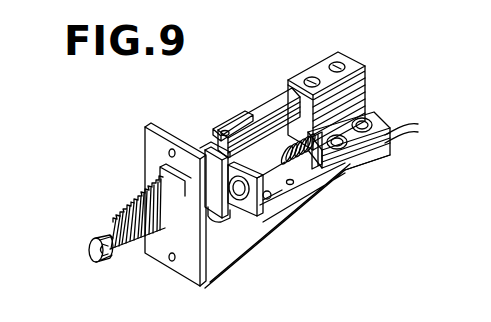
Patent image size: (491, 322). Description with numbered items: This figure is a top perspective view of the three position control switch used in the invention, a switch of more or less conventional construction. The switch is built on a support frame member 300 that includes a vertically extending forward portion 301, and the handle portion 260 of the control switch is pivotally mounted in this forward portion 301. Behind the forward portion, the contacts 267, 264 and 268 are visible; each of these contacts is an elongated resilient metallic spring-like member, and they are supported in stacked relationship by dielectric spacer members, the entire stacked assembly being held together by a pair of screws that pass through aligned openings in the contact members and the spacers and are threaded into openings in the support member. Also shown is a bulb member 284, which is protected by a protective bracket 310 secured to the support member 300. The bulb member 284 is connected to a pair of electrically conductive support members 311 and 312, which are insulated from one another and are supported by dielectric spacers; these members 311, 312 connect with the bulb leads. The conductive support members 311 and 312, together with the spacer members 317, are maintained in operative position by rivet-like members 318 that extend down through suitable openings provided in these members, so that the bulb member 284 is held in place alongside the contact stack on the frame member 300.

The handle portion 260 is at (122, 213).
The contact 264 is at (247, 130).
The contact 267 is at (281, 105).
The contact 268 is at (265, 137).
The bulb member 284 is at (282, 175).
The support frame member 300 is at (240, 256).
The vertically extending forward portion 301 is at (165, 129).
The protective bracket 310 is at (262, 213).
The electrically conductive support member 311 is at (322, 182).
The electrically conductive support member 312 is at (340, 181).
The spacer member 317 is at (422, 136).
The rivet-like member 318 is at (372, 168).